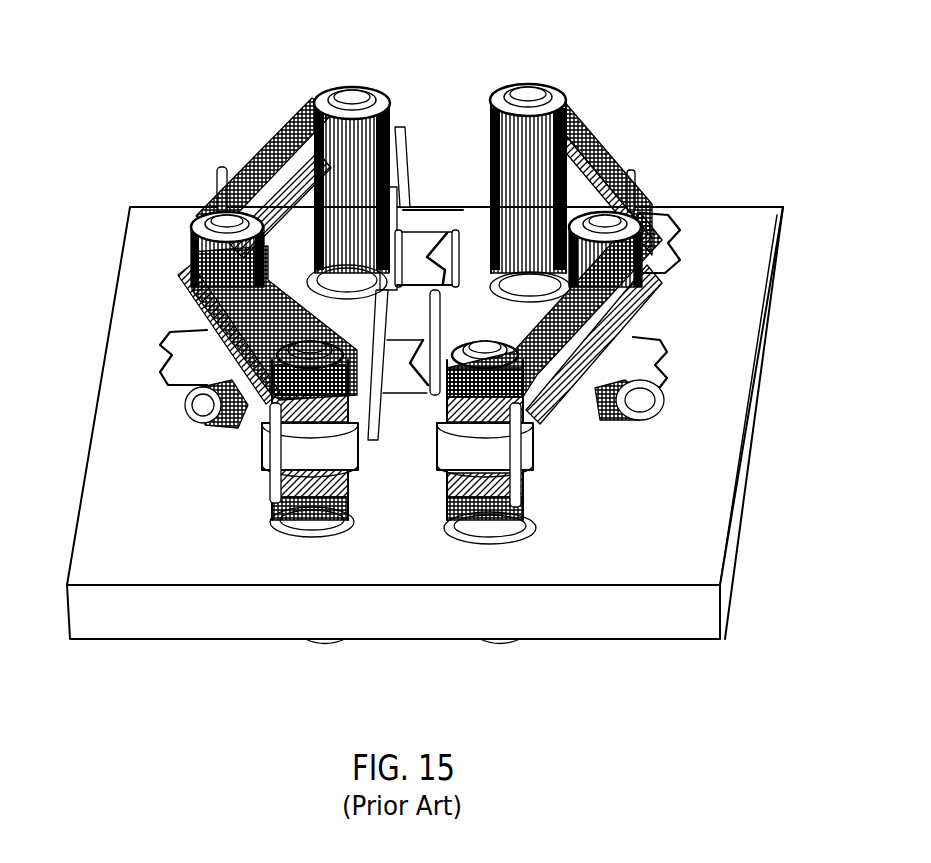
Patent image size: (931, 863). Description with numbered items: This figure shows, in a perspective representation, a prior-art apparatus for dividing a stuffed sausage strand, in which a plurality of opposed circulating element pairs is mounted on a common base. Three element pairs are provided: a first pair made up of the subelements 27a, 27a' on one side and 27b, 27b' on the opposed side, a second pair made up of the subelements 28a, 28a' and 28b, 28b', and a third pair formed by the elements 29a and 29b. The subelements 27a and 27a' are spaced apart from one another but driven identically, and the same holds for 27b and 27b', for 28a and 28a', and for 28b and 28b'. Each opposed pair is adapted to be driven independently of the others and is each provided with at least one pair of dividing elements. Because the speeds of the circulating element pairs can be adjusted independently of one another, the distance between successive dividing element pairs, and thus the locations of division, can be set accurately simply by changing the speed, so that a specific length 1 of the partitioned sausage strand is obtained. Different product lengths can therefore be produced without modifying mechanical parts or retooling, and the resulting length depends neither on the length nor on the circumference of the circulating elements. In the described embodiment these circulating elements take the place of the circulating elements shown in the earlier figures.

The length 1 is at (751, 69).
The circulating subelement 27a is at (293, 193).
The circulating subelement 27a' is at (279, 163).
The circulating subelement 27b is at (571, 191).
The circulating subelement 27b' is at (674, 354).
The circulating subelement 28a is at (199, 323).
The circulating subelement 28a' is at (154, 386).
The circulating subelement 28b is at (637, 304).
The circulating subelement 28b' is at (666, 430).
The circulating element 29a is at (290, 450).
The circulating element 29b is at (500, 437).